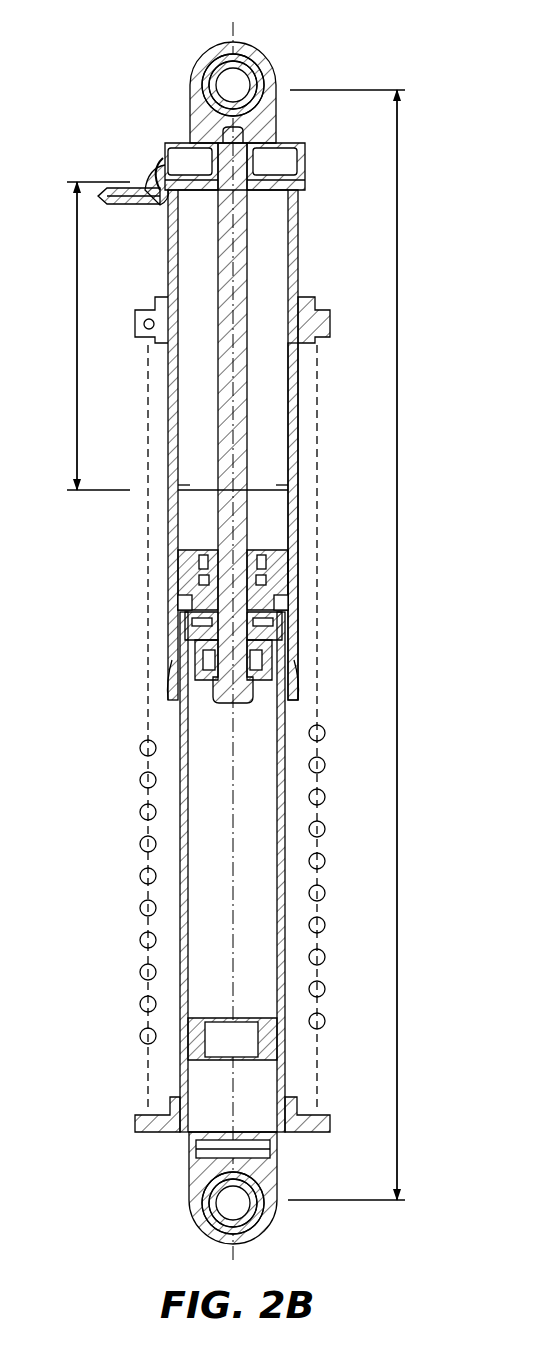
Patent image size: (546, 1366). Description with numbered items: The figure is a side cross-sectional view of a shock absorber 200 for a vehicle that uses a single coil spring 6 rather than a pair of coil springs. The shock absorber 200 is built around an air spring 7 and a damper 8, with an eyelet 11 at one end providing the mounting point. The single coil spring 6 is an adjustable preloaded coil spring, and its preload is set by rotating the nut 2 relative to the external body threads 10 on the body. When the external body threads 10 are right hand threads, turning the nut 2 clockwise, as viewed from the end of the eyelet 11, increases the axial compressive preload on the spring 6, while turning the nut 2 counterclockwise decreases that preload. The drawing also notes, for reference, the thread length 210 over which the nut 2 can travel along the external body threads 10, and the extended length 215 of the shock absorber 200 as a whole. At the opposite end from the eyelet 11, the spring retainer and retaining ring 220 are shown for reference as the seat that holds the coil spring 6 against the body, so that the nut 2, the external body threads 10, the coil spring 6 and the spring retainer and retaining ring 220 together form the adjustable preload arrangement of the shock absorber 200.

The shock absorber 200 is at (108, 98).
The eyelet 11 is at (230, 46).
The air spring 7 is at (278, 258).
The external body threads 10 is at (302, 380).
The nut 2 is at (132, 323).
The thread length 210 is at (77, 360).
The extended length 215 is at (397, 727).
The coil spring 6 is at (140, 848).
The damper 8 is at (338, 628).
The spring retainer and retaining ring 220 is at (135, 1122).